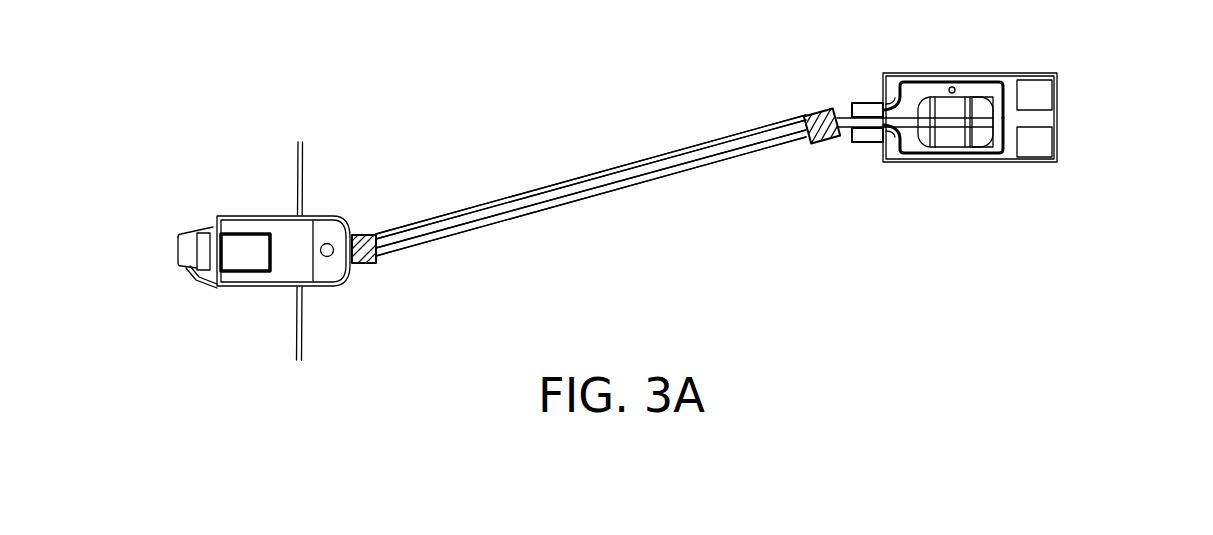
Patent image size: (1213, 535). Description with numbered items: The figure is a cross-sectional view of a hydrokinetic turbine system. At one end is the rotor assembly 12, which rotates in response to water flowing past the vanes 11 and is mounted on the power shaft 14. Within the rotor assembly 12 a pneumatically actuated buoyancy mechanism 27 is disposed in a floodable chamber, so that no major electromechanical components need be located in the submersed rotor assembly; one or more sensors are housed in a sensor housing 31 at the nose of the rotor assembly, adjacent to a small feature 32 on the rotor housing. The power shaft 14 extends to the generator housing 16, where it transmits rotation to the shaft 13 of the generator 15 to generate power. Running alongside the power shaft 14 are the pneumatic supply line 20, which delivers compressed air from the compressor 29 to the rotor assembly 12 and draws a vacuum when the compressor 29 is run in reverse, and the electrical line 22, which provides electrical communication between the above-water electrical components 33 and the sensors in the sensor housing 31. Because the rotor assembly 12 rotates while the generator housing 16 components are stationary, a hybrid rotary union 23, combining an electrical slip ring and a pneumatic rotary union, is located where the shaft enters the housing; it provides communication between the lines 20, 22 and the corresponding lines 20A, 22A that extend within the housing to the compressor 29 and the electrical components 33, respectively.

The vanes 11 is at (293, 185).
The rotor assembly 12 is at (200, 194).
The shaft of the generator 13 is at (896, 150).
The power shaft 14 is at (547, 195).
The generator 15 is at (957, 97).
The generator housing 16 is at (1008, 73).
The pneumatic supply lines 20 is at (697, 148).
The pneumatic line 20A is at (917, 80).
The electrical line 22 is at (705, 165).
The electrical line 22A is at (918, 153).
The hybrid rotary union 23 is at (867, 102).
The pneumatically actuated buoyancy mechanism 27 is at (230, 262).
The compressor 29 is at (1038, 97).
The sensor housing 31 is at (183, 248).
The button 32 is at (327, 243).
The electrical components 33 is at (1040, 142).